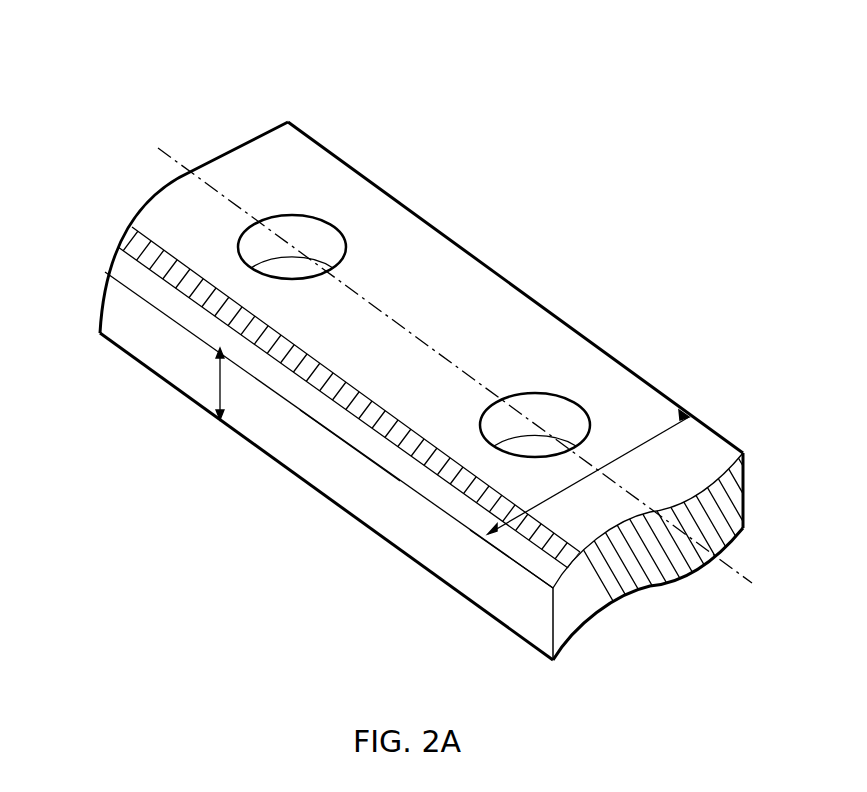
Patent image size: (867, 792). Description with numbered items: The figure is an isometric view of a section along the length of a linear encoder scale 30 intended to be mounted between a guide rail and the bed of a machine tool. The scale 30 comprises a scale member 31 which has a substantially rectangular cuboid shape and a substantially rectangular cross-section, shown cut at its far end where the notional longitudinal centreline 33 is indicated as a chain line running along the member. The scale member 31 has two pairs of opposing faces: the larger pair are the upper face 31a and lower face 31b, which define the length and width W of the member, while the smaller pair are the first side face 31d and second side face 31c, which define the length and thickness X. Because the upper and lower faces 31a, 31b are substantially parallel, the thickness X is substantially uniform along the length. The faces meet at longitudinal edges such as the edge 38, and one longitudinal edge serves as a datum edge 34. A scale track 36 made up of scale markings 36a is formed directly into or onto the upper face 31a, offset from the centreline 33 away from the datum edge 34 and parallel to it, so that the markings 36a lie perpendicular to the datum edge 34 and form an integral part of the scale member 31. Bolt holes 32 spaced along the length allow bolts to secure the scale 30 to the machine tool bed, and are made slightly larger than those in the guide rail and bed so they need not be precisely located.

The linear encoder scale 30 is at (366, 104).
The scale member 31 is at (398, 228).
The upper face 31a is at (348, 440).
The lower face 31b is at (432, 609).
The second side face 31c is at (380, 523).
The first side face 31d is at (656, 376).
The bolt holes 32 is at (307, 230).
The notional longitudinal centreline 33 is at (695, 545).
The datum edge 34 is at (510, 282).
The scale track 36 is at (153, 270).
The scale markings 36a is at (170, 265).
The longitudinal edge 38 is at (513, 563).
The thickness X is at (220, 382).
The width W is at (643, 449).